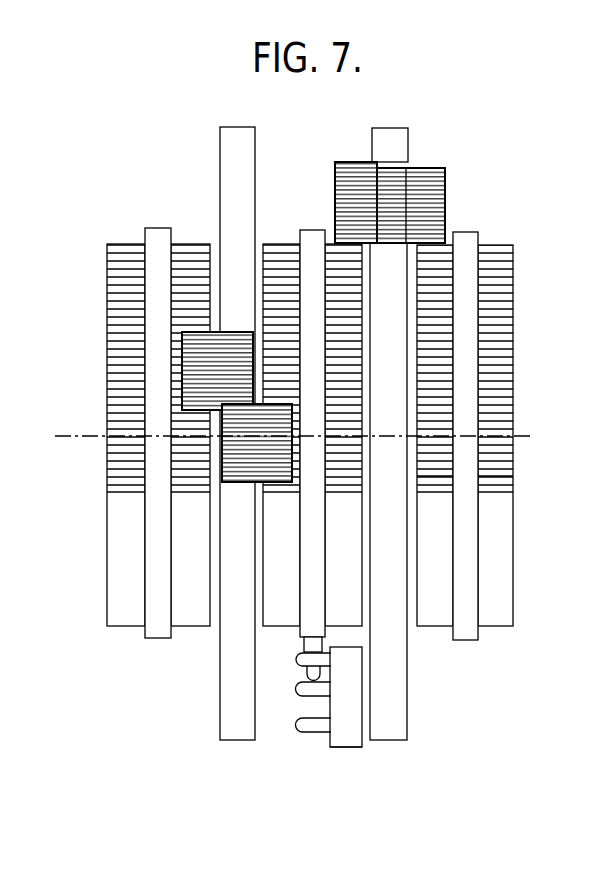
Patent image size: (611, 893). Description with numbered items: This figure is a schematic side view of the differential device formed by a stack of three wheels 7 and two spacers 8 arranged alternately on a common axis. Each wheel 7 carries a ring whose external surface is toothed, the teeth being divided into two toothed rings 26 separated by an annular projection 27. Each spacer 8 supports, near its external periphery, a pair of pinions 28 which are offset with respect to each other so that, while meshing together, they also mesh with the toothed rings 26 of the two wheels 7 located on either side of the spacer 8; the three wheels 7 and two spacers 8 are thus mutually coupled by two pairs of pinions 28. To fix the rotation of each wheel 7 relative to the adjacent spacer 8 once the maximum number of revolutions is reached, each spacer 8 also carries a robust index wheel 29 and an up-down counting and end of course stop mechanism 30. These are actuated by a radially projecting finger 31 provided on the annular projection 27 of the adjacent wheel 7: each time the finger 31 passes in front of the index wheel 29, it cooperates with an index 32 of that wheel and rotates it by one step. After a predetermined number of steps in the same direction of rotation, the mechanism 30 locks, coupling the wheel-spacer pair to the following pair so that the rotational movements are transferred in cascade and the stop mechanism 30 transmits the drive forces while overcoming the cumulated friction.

The wheel 7 is at (125, 567).
The spacer 8 is at (242, 170).
The toothed ring 26 is at (438, 478).
The annular projection 27 is at (465, 578).
The pinion 28 is at (357, 185).
The index wheel 29 is at (343, 747).
The up-down counting and end of course stop mechanism 30 is at (347, 718).
The finger 31 is at (308, 672).
The index 32 is at (313, 727).